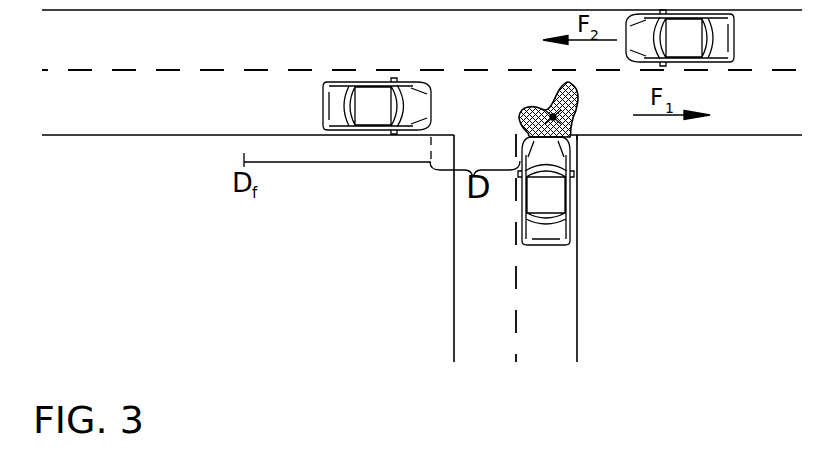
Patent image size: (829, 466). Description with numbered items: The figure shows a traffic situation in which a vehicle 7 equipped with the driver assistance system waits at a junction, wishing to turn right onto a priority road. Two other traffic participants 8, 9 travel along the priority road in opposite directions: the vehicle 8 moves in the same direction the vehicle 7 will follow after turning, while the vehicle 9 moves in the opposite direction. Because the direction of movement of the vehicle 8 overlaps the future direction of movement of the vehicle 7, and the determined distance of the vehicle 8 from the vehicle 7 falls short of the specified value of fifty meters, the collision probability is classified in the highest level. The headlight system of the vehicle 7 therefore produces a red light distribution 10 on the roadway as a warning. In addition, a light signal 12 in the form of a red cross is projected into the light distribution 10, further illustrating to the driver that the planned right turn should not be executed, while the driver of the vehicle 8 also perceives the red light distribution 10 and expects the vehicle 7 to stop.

The vehicle 7 is at (556, 222).
The traffic participant 8 is at (380, 117).
The traffic participant 9 is at (692, 49).
The light distribution 10 is at (577, 96).
The light signal 12 is at (577, 137).